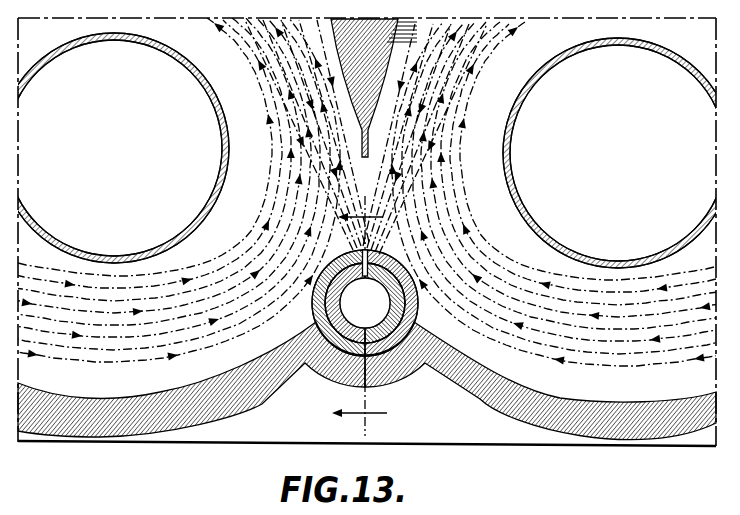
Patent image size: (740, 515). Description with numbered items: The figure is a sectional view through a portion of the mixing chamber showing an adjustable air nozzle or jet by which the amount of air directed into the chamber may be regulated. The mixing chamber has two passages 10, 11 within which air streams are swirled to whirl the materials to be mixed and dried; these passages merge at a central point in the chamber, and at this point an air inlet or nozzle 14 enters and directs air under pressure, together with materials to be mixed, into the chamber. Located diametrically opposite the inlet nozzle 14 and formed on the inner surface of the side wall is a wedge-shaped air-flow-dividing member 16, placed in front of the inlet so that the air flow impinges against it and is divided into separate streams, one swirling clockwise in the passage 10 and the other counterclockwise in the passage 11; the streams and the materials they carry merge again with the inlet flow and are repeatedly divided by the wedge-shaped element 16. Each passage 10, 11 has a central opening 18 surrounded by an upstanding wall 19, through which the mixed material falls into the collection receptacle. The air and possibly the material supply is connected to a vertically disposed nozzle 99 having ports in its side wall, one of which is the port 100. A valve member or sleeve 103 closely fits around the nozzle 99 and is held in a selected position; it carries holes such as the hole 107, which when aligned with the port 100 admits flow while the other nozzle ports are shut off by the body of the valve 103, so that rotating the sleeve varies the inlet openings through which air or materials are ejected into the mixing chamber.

The passage 10 is at (540, 381).
The passage 11 is at (191, 379).
The air inlet nozzle 14 is at (374, 323).
The wedge-shaped air-flow-dividing member 16 is at (372, 120).
The central opening 18 is at (366, 150).
The upstanding wall 19 is at (97, 250).
The nozzle 99 is at (333, 300).
The port 100 is at (377, 271).
The valve member or sleeve 103 is at (322, 270).
The hole 107 is at (361, 252).